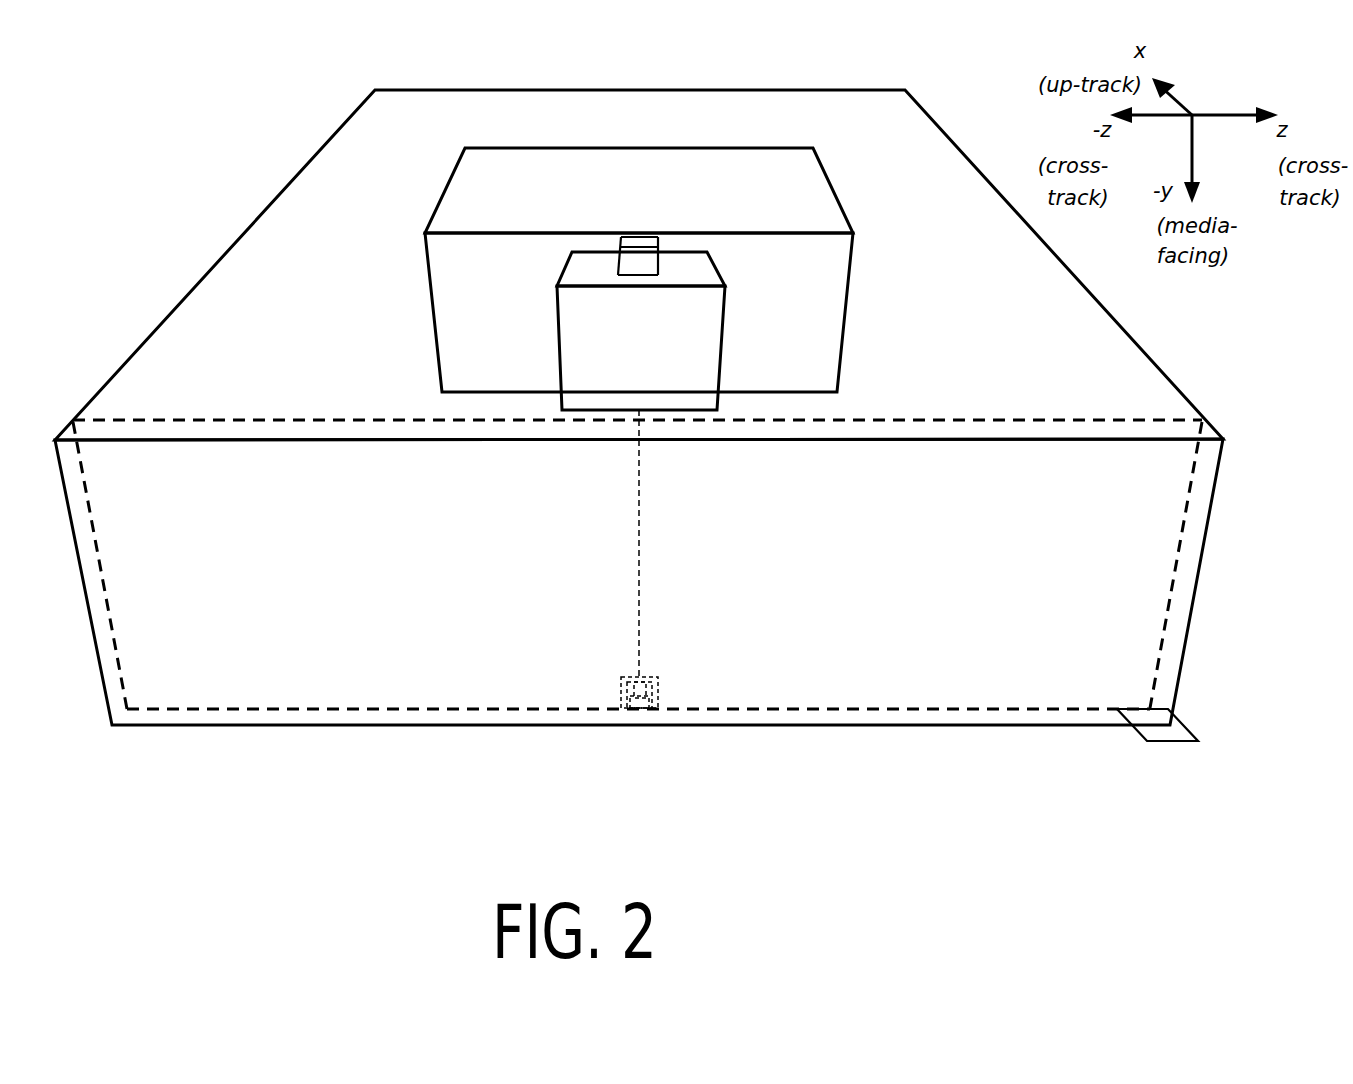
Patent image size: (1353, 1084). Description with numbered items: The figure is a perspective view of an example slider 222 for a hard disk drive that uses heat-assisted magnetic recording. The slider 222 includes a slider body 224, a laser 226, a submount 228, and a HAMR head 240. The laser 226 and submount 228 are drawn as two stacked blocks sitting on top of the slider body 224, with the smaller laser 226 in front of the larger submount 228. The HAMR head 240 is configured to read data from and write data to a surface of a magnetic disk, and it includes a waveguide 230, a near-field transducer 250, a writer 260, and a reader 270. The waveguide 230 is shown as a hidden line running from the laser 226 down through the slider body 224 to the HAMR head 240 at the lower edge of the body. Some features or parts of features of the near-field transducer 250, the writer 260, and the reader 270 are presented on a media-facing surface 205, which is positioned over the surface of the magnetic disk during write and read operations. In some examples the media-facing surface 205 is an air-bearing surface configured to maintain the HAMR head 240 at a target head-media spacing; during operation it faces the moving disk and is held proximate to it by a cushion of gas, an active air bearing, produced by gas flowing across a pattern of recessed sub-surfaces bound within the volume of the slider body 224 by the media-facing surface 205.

The media-facing surface 205 is at (1175, 733).
The slider 222 is at (200, 180).
The slider body 224 is at (898, 132).
The laser 226 is at (703, 353).
The submount 228 is at (450, 313).
The waveguide 230 is at (640, 588).
The HAMR head 240 is at (668, 654).
The near-field transducer 250 is at (640, 700).
The writer 260 is at (652, 692).
The reader 270 is at (633, 687).